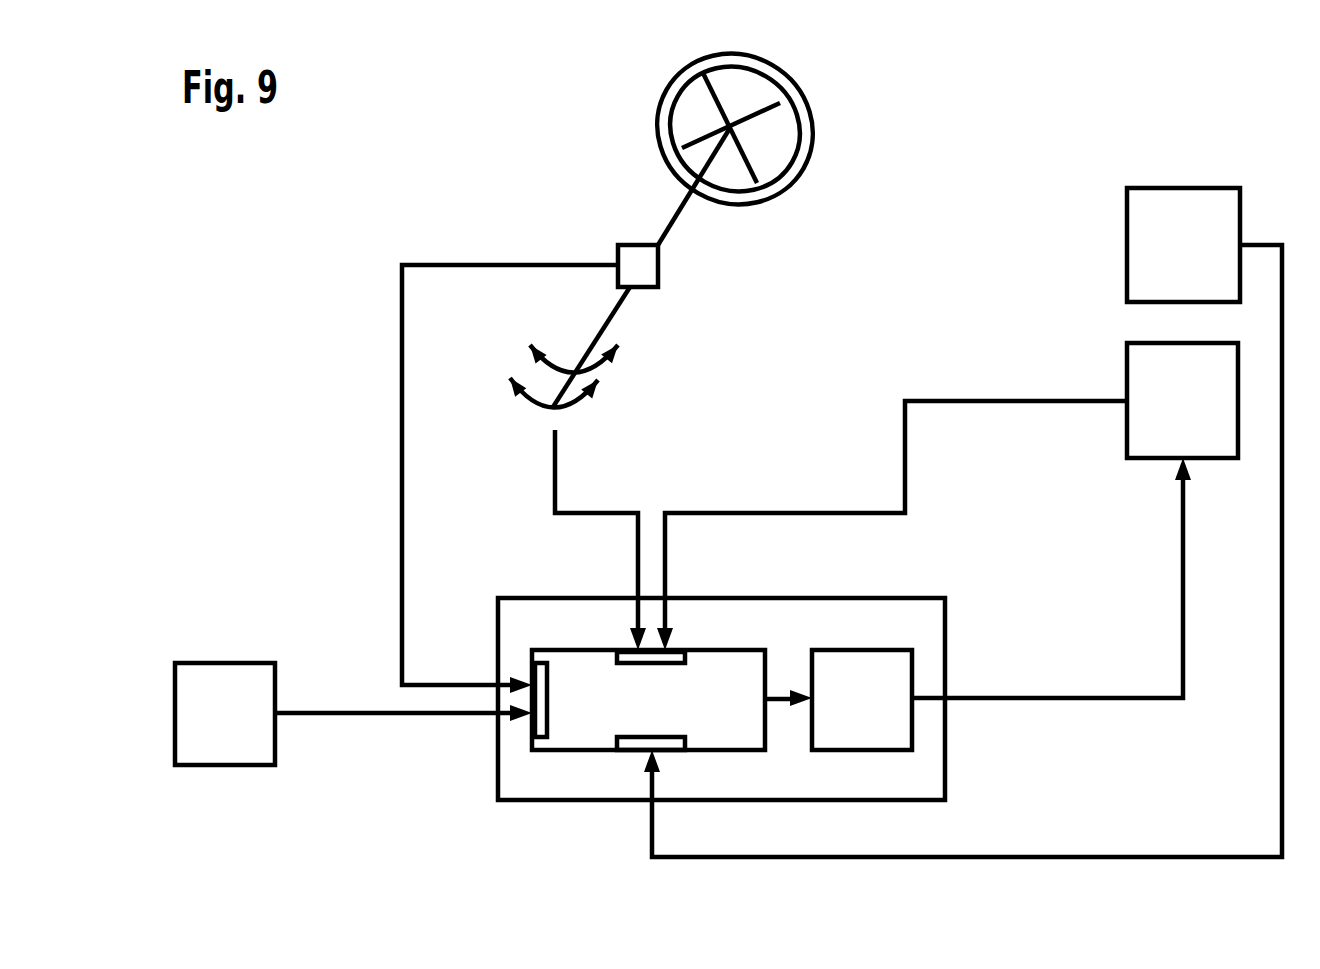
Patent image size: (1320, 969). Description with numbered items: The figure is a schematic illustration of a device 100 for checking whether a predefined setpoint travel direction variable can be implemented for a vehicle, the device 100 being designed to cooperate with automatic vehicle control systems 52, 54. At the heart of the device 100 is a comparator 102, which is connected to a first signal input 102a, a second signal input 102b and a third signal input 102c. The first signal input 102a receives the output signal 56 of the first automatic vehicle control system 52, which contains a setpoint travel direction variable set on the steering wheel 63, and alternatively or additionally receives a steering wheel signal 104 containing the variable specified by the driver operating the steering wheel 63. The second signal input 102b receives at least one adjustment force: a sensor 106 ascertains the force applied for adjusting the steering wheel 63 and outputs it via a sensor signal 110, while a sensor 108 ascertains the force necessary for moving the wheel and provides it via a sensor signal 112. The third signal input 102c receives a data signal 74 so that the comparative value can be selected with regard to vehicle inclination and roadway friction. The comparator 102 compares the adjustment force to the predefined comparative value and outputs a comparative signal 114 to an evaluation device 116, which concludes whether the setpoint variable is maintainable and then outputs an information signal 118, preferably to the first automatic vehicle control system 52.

The steering wheel 63 is at (802, 128).
The sensor 106 is at (658, 270).
The steering wheel signal 104 is at (612, 513).
The comparator 102 is at (577, 650).
The first signal input 102a is at (683, 663).
The second signal input 102b is at (537, 725).
The third signal input 102c is at (623, 738).
The device 100 is at (590, 800).
The sensor 108 is at (228, 663).
The sensor signal 110 is at (402, 440).
The sensor signal 112 is at (350, 713).
The comparative signal 114 is at (777, 697).
The evaluation device 116 is at (912, 732).
The information signal 118 is at (1183, 658).
The data signal 74 is at (1280, 541).
The output signal 56 is at (905, 458).
The first automatic vehicle control system 52 is at (1127, 428).
The automatic vehicle control system 54 is at (1127, 243).